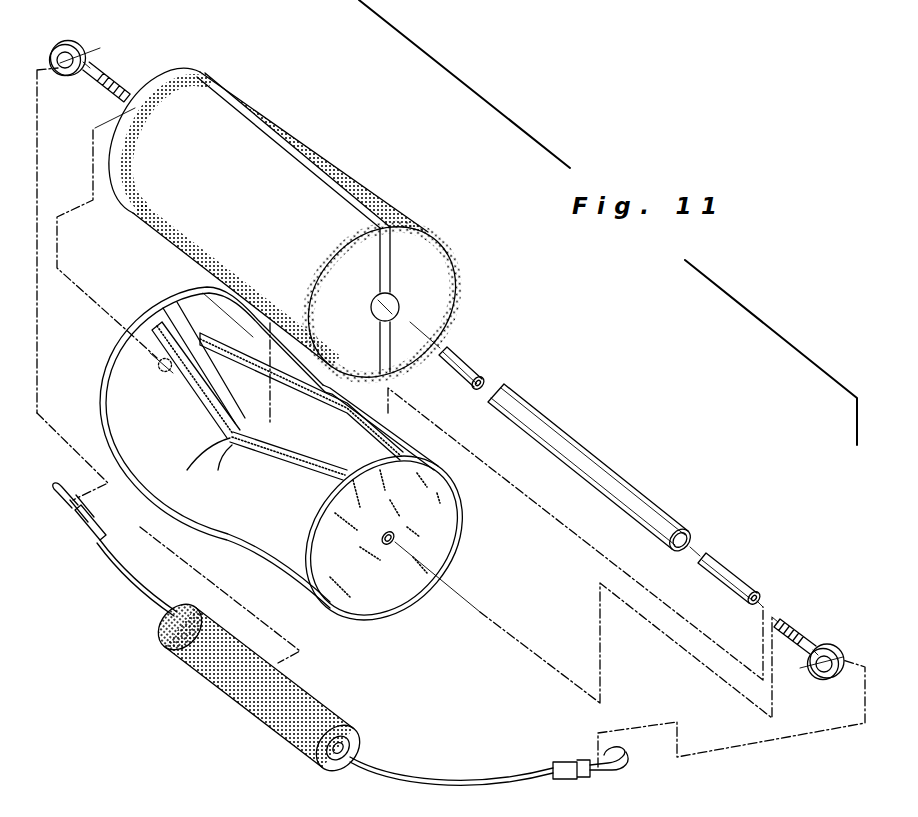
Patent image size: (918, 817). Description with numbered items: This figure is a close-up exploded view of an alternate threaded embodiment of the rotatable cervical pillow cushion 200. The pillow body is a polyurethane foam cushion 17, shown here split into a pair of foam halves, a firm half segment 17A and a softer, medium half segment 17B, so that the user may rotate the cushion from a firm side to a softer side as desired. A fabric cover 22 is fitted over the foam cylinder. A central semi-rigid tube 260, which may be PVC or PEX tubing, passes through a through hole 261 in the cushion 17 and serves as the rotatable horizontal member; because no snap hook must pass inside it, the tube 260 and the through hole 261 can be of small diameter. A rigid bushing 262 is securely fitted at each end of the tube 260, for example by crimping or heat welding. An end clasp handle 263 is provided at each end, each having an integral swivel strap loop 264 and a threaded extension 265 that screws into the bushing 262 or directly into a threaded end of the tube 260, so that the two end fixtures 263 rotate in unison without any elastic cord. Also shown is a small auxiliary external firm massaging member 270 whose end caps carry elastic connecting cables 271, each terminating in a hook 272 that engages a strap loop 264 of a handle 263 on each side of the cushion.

The foam cushion 17 is at (314, 136).
The foam half segment 17A is at (128, 210).
The foam half segment 17B is at (230, 70).
The fabric cover 22 is at (393, 584).
The rotatable cushion 200 is at (466, 192).
The central tube 260 is at (598, 458).
The through hole 261 is at (402, 300).
The rigid bushing 262 is at (470, 356).
The end clasp handle 263 is at (73, 92).
The swivel strap loop 264 is at (78, 42).
The threaded extension 265 is at (116, 78).
The auxiliary external firm massaging member 270 is at (238, 713).
The elastic connecting cable 271 is at (127, 578).
The hook 272 is at (53, 510).